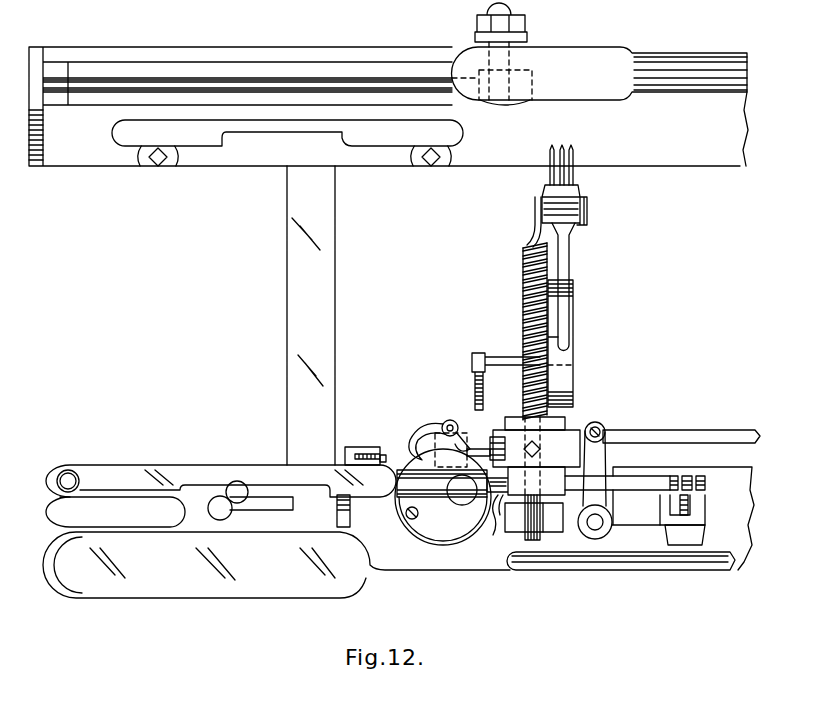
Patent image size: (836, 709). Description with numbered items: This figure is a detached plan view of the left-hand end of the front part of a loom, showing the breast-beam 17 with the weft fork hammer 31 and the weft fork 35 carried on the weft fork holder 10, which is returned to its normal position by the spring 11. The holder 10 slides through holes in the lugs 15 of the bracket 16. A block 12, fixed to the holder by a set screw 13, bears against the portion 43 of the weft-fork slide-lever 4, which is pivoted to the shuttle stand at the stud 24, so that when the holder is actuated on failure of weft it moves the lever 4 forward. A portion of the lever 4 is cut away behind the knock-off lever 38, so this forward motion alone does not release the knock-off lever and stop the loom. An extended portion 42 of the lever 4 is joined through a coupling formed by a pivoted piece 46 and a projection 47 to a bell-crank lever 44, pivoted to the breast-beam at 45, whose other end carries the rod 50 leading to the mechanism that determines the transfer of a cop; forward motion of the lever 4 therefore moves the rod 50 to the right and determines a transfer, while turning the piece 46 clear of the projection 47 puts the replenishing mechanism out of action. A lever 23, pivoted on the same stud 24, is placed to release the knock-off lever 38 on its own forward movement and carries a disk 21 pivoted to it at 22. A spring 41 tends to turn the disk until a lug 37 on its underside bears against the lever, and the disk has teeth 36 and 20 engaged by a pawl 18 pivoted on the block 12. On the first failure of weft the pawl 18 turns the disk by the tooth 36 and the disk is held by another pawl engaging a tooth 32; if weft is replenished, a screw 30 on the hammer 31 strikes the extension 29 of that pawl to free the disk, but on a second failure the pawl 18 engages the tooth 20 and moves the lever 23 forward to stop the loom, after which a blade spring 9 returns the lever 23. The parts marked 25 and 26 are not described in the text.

The weft-fork slide-lever 4 is at (221, 481).
The blade spring 9 is at (385, 457).
The weft fork holder 10 is at (537, 213).
The spring 11 is at (524, 291).
The block 12 is at (583, 432).
The set screw 13 is at (533, 450).
The lugs 15 is at (515, 423).
The bracket 16 is at (552, 514).
The breast-beam 17 is at (561, 562).
The pawl 18 is at (495, 439).
The tooth 20 is at (519, 517).
The disk 21 is at (443, 497).
The pivot 22 is at (456, 499).
The lever 23 is at (307, 495).
The stud 24 is at (78, 471).
The slide 25 is at (353, 447).
The pawl 26 is at (448, 421).
The extension of the pawl 29 is at (476, 448).
The screw 30 is at (483, 381).
The weft fork hammer 31 is at (560, 373).
The tooth 32 is at (451, 451).
The weft fork 35 is at (571, 259).
The tooth 36 is at (498, 517).
The lug 37 is at (404, 507).
The knock-off lever 38 is at (238, 481).
The spring 41 is at (276, 565).
The extended portion of the lever 42 is at (630, 478).
The portion of the lever 43 is at (530, 481).
The bell-crank lever 44 is at (598, 500).
The pivot 45 is at (603, 521).
The coupling piece 46 is at (690, 502).
The projection 47 is at (690, 512).
The rod 50 is at (722, 437).